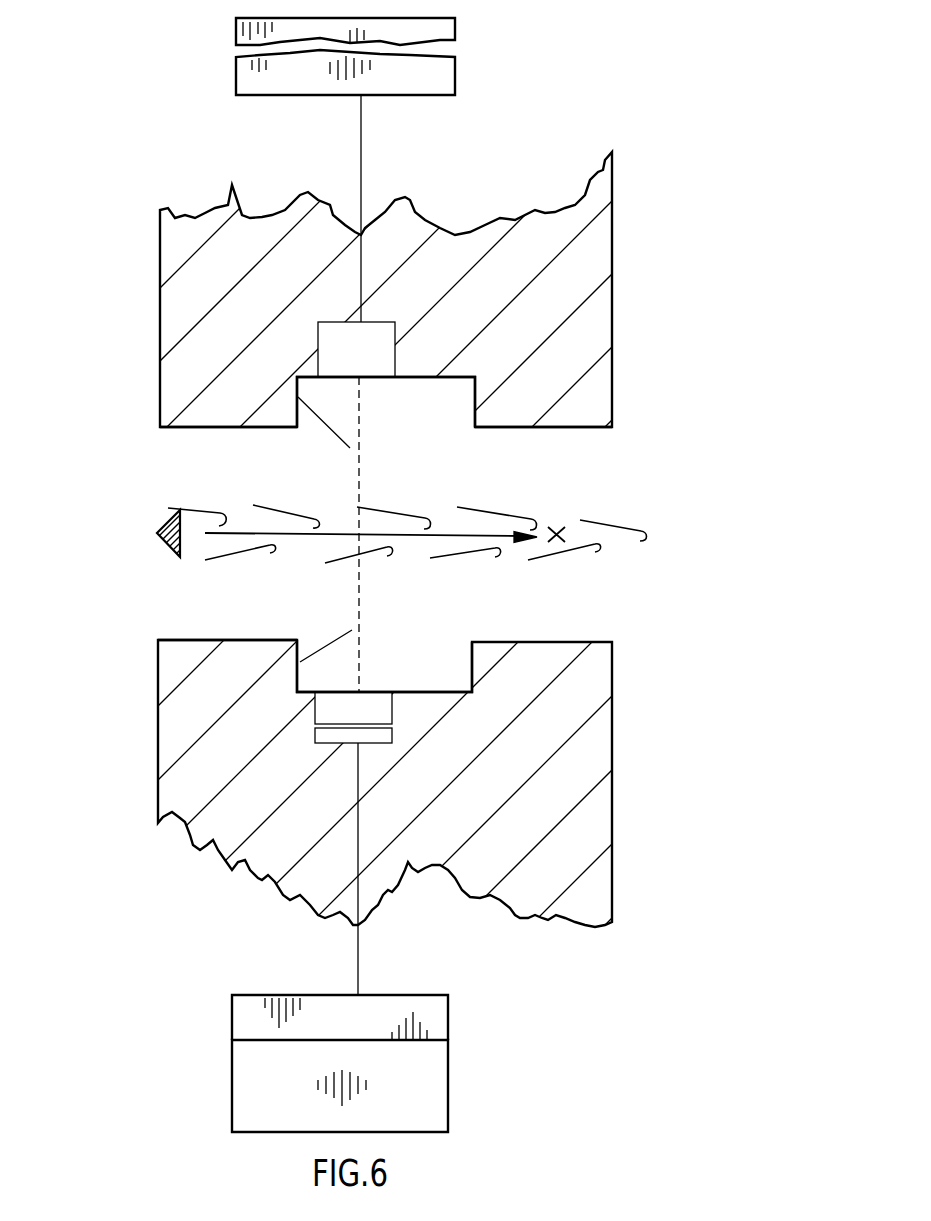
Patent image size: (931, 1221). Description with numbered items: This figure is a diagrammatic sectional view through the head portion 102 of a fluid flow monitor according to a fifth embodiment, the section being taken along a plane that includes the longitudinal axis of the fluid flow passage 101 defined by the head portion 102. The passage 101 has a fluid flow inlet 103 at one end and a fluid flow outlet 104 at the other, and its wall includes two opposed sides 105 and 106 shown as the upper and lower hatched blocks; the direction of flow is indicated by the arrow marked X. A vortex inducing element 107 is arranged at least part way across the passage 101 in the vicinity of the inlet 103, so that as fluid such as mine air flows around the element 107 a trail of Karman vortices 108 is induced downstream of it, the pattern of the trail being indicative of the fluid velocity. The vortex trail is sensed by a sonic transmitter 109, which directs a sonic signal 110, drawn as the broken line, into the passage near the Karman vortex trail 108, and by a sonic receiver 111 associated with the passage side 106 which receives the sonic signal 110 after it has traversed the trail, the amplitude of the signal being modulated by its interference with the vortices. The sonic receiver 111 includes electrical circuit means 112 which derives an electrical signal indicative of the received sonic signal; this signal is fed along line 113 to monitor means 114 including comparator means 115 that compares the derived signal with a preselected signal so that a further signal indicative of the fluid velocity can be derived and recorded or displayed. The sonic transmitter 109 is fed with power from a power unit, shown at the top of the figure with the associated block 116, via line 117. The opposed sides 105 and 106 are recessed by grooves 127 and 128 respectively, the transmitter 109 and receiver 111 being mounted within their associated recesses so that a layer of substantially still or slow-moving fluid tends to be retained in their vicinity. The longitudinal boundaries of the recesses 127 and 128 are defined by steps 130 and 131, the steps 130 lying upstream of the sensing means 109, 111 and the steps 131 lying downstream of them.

The fluid flow passage 101 is at (207, 613).
The head portion 102 is at (192, 347).
The fluid flow inlet 103 is at (165, 468).
The fluid flow outlet 104 is at (590, 449).
The passage side 105 is at (224, 440).
The passage side 106 is at (216, 631).
The vortex inducing element 107 is at (162, 530).
The Karman vortices 108 is at (240, 553).
The sonic transmitter 109 is at (343, 337).
The sonic signal 110 is at (357, 487).
The sonic receiver 111 is at (372, 717).
The electrical circuit means 112 is at (372, 736).
The line 113 is at (358, 817).
The monitor means 114 is at (462, 1066).
The comparator means 115 is at (430, 1018).
The upper press member 116 is at (435, 66).
The line 117 is at (361, 125).
The groove 127 is at (452, 398).
The groove 128 is at (452, 676).
The step 130 is at (350, 448).
The step 131 is at (475, 413).